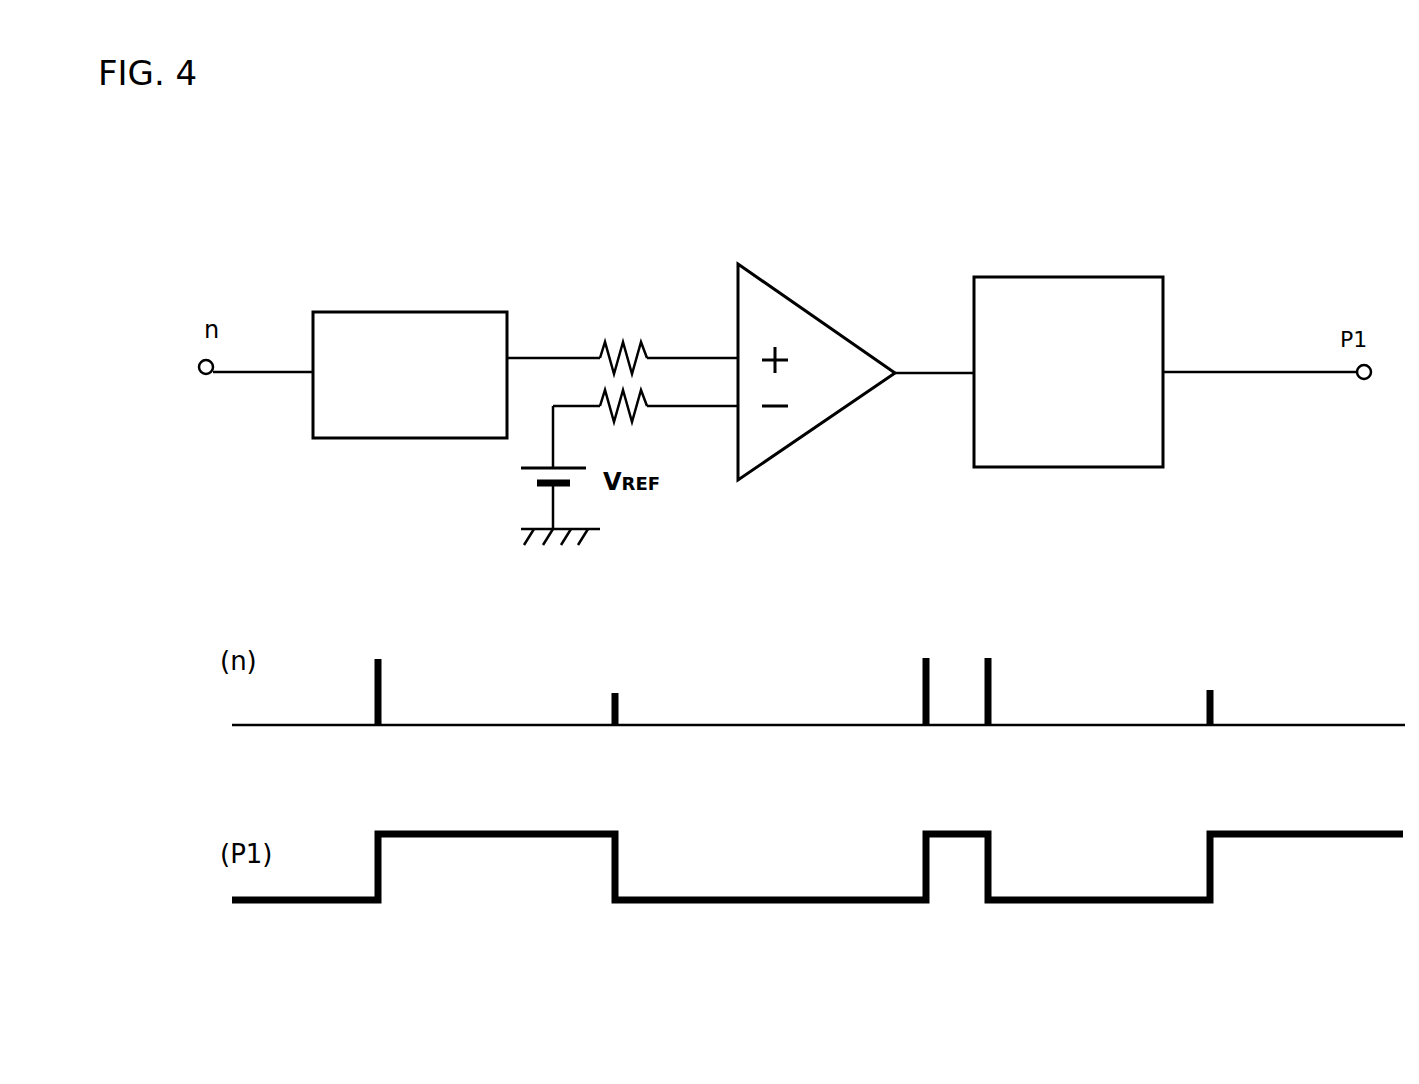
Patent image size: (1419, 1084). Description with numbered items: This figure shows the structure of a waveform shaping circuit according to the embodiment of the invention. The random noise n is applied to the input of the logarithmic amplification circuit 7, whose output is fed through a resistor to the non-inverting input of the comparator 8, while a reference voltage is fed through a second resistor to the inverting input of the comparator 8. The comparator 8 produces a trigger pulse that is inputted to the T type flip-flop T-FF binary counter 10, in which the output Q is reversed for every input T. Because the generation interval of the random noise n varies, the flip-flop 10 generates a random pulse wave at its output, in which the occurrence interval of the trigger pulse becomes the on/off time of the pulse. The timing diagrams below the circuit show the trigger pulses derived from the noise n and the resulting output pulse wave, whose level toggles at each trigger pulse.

The logarithmic amplification circuit 7 is at (410, 312).
The comparator 8 is at (785, 290).
The T type flip-flop T-FF binary counter 10 is at (1148, 277).